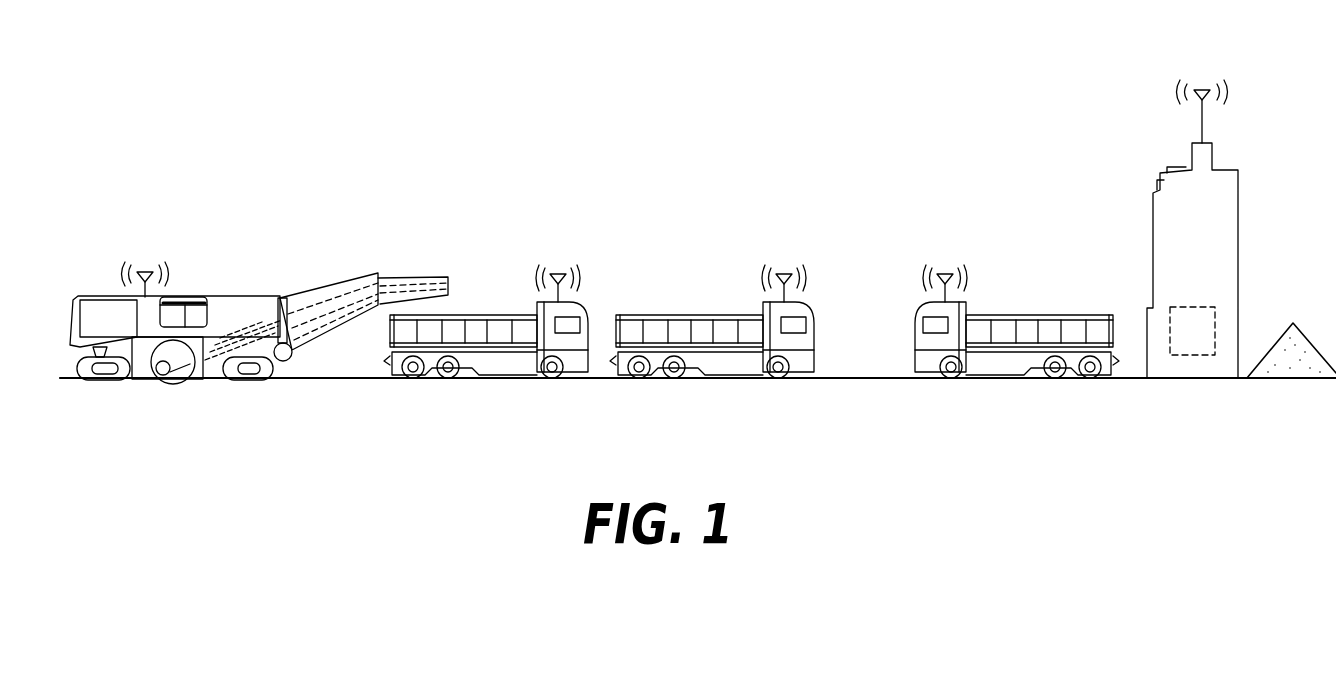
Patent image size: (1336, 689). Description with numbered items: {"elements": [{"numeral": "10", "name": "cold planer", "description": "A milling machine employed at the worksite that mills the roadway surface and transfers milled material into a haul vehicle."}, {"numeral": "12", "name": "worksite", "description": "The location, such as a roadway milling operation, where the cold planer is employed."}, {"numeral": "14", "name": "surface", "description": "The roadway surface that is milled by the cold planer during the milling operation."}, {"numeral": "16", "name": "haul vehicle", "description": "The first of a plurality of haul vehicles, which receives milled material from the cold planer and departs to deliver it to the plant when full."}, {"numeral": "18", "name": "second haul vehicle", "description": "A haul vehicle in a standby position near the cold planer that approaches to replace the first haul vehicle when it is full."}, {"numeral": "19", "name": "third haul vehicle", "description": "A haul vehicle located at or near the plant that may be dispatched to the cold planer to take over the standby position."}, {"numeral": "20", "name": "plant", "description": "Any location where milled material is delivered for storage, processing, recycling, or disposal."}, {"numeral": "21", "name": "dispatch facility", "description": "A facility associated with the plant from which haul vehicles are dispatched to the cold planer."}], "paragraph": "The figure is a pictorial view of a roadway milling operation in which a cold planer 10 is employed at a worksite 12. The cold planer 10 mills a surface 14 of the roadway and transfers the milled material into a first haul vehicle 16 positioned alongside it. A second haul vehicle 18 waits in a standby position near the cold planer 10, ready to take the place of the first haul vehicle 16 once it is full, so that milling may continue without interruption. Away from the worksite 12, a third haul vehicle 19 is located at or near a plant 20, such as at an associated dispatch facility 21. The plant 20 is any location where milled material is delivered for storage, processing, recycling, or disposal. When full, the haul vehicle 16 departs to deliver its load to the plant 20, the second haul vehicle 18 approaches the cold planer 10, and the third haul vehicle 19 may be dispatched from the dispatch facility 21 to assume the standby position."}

The milling machine 10 is at (220, 296).
The worksite system 12 is at (703, 120).
The worksite surface 14 is at (310, 379).
The haul truck 16 is at (580, 308).
The haul truck 18 is at (812, 303).
The haul truck 19 is at (1030, 316).
The control station 20 is at (1205, 272).
The controller 21 is at (1205, 345).